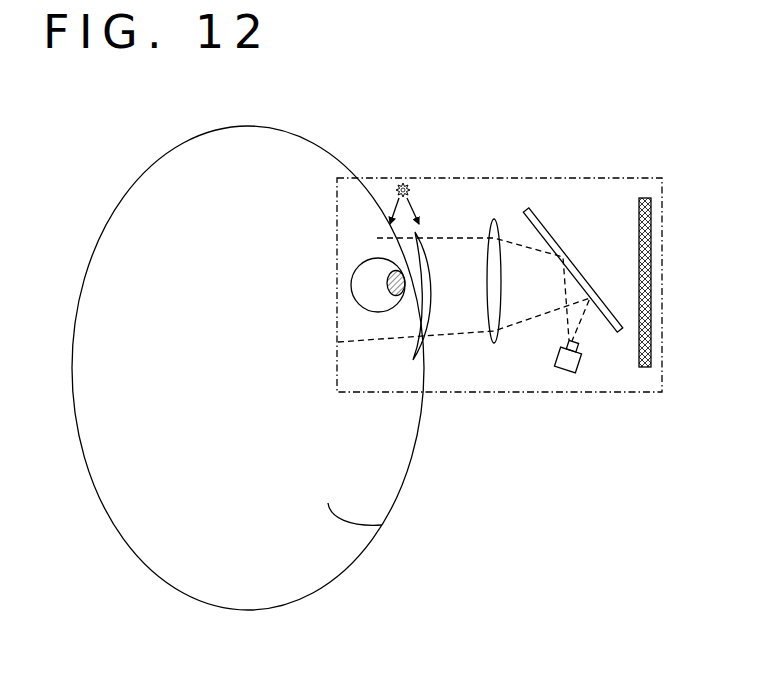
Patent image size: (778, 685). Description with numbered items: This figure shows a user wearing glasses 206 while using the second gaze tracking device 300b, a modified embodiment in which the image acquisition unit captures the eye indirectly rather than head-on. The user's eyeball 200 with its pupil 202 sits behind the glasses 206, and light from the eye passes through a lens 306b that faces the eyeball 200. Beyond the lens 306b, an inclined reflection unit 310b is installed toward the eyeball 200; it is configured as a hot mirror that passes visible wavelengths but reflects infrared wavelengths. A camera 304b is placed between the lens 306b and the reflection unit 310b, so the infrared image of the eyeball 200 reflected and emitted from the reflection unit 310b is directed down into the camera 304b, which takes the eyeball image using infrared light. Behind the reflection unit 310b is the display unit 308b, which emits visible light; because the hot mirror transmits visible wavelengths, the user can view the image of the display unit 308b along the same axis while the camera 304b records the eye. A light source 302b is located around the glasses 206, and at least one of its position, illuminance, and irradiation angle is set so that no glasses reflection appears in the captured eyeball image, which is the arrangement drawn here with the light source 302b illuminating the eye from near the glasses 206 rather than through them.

The eyeball 200 is at (356, 299).
The pupil 202 is at (388, 277).
The glasses 206 is at (428, 348).
The second gaze tracking device 300b is at (542, 177).
The light source 302b is at (403, 183).
The camera 304b is at (562, 373).
The lens 306b is at (496, 220).
The display unit 308b is at (652, 227).
The reflection unit 310b is at (558, 246).